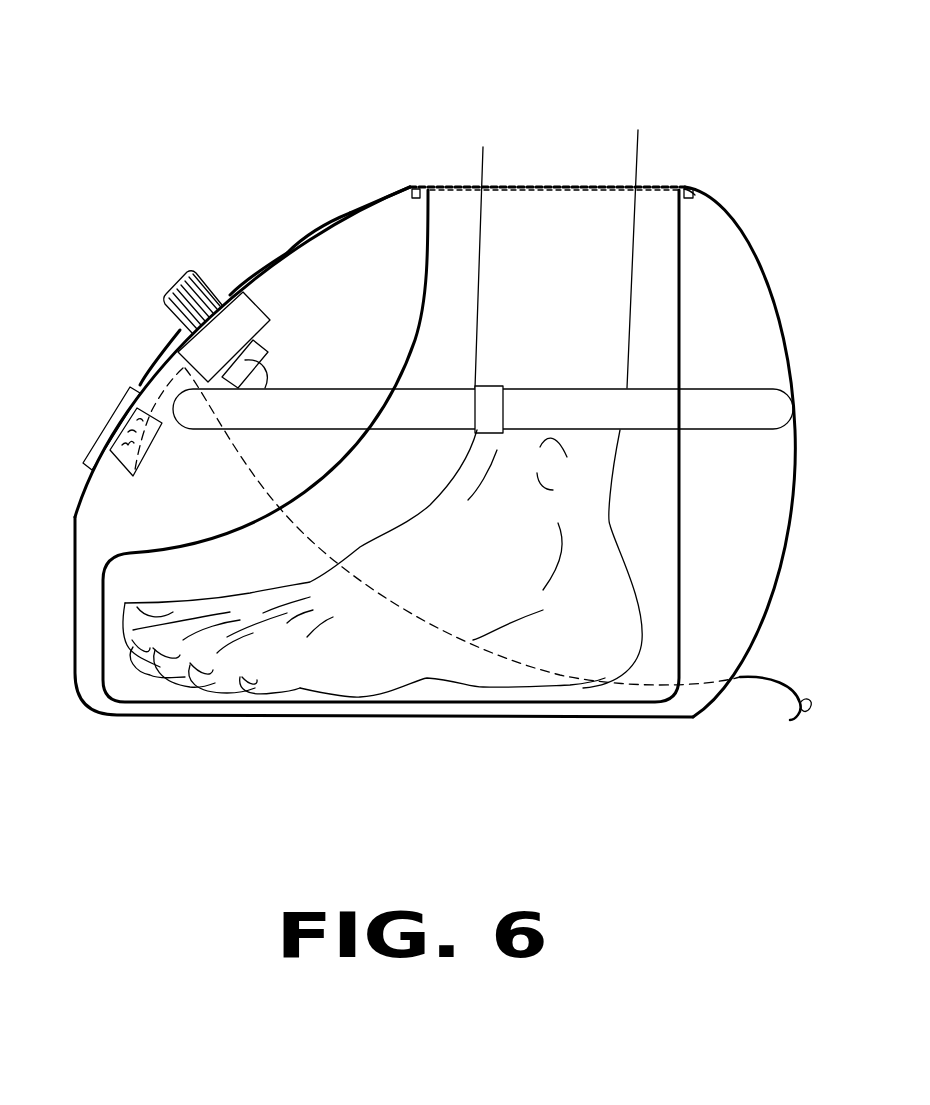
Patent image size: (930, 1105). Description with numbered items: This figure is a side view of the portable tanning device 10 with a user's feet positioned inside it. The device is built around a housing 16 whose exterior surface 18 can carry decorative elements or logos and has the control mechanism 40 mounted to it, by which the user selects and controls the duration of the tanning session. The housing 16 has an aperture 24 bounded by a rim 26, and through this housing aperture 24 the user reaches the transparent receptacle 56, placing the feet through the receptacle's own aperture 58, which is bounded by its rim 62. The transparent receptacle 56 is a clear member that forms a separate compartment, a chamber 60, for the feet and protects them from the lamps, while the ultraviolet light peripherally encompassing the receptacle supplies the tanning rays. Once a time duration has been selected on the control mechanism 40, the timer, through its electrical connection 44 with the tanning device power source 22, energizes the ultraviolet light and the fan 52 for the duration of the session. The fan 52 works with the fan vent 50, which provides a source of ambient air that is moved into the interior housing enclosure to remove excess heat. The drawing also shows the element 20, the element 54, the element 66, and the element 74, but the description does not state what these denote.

The foot support device 10 is at (285, 140).
The housing 16 is at (380, 172).
The upper wall 18 is at (287, 253).
The outer wall 20 is at (297, 242).
The strap end 22 is at (772, 683).
The top wall 24 is at (570, 187).
The rear wall 26 is at (682, 189).
The adjustment knob assembly 40 is at (150, 332).
The foot 44 is at (457, 643).
The plate 50 is at (110, 432).
The control block 52 is at (140, 468).
The panel 54 is at (153, 378).
The strap 56 is at (245, 505).
The front leg line 58 is at (507, 187).
The liner 60 is at (663, 580).
The tab 62 is at (687, 190).
The fasteners 66 is at (426, 187).
The cross bar 74 is at (266, 376).